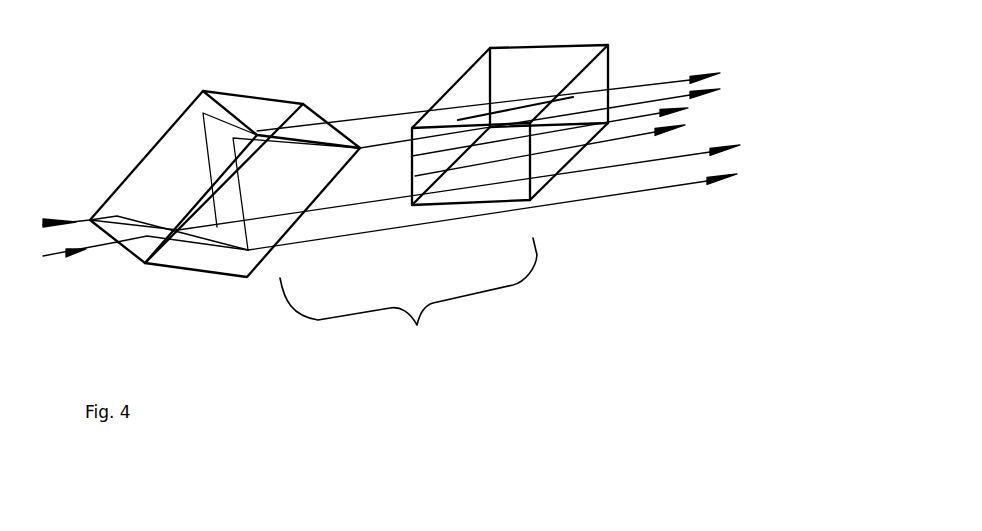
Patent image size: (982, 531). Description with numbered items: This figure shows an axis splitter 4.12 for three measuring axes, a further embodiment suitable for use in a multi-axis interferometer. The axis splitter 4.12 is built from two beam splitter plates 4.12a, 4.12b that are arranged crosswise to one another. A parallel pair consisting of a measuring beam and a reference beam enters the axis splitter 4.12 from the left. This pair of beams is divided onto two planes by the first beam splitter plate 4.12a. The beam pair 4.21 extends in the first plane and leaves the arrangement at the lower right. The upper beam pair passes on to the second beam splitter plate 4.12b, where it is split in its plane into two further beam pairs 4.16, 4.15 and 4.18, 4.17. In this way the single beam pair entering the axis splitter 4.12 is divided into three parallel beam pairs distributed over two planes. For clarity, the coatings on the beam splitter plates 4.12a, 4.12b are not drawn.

The axis splitter 4.12 is at (408, 297).
The first beam splitter plate 4.12a is at (225, 203).
The second beam splitter plate 4.12b is at (532, 109).
The beam pair 4.16 is at (551, 89).
The beam pair 4.15 is at (757, 53).
The beam pair 4.18 is at (628, 129).
The beam pair 4.17 is at (750, 110).
The beam pair 4.21 is at (747, 173).